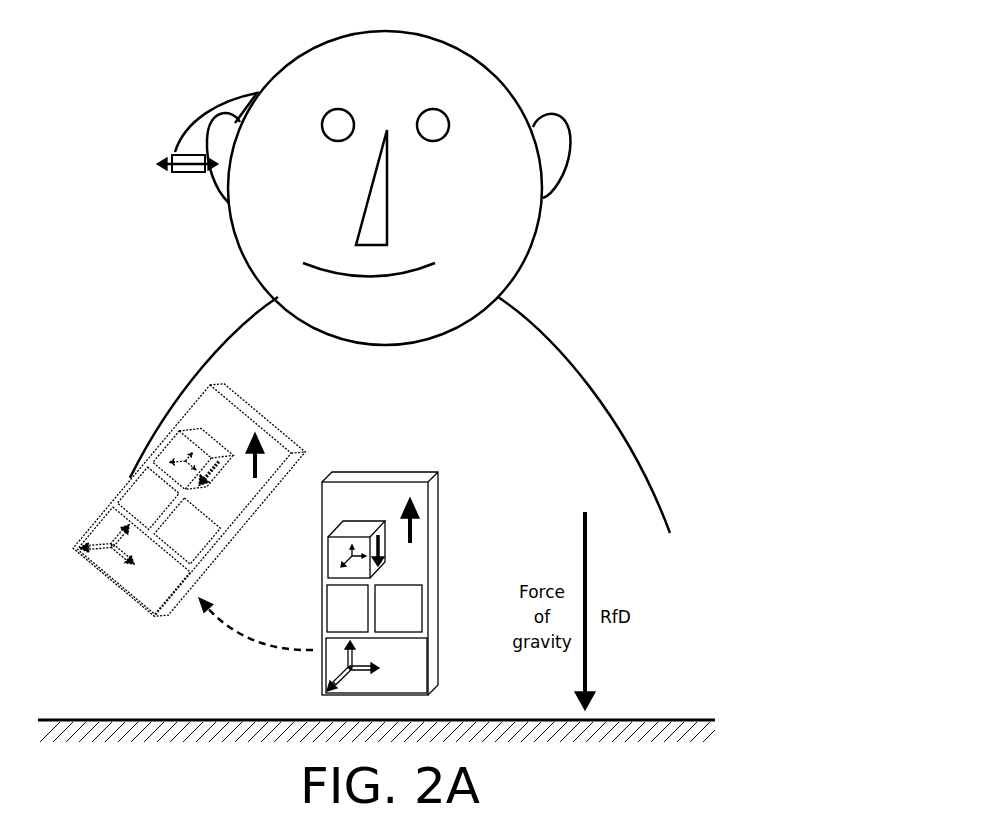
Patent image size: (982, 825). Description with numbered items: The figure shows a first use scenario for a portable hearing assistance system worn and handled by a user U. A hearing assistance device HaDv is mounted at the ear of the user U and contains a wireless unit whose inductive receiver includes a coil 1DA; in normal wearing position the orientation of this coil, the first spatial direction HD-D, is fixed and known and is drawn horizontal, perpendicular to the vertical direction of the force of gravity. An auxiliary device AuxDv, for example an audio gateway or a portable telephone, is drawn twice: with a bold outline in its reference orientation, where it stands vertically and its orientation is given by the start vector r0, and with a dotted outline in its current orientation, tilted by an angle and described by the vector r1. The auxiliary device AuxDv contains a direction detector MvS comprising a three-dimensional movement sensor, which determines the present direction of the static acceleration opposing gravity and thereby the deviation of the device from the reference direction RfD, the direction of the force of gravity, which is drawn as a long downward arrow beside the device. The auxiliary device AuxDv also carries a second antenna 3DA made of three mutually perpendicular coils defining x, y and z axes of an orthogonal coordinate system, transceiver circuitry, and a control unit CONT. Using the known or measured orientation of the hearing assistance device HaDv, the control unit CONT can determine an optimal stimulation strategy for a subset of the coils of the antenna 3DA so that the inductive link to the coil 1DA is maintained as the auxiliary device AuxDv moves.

The user U is at (502, 78).
The hearing assistance device HaDv is at (192, 130).
The first spatial direction HD-D is at (173, 157).
The first antenna coil 1DA is at (185, 174).
The auxiliary device AuxDv is at (380, 583).
The direction detector MvS is at (356, 549).
The reference direction RfD is at (380, 538).
The control unit CONT is at (398, 608).
The second antenna 3DA is at (376, 665).
The start orientation vector r0 is at (412, 532).
The current orientation vector r1 is at (252, 467).